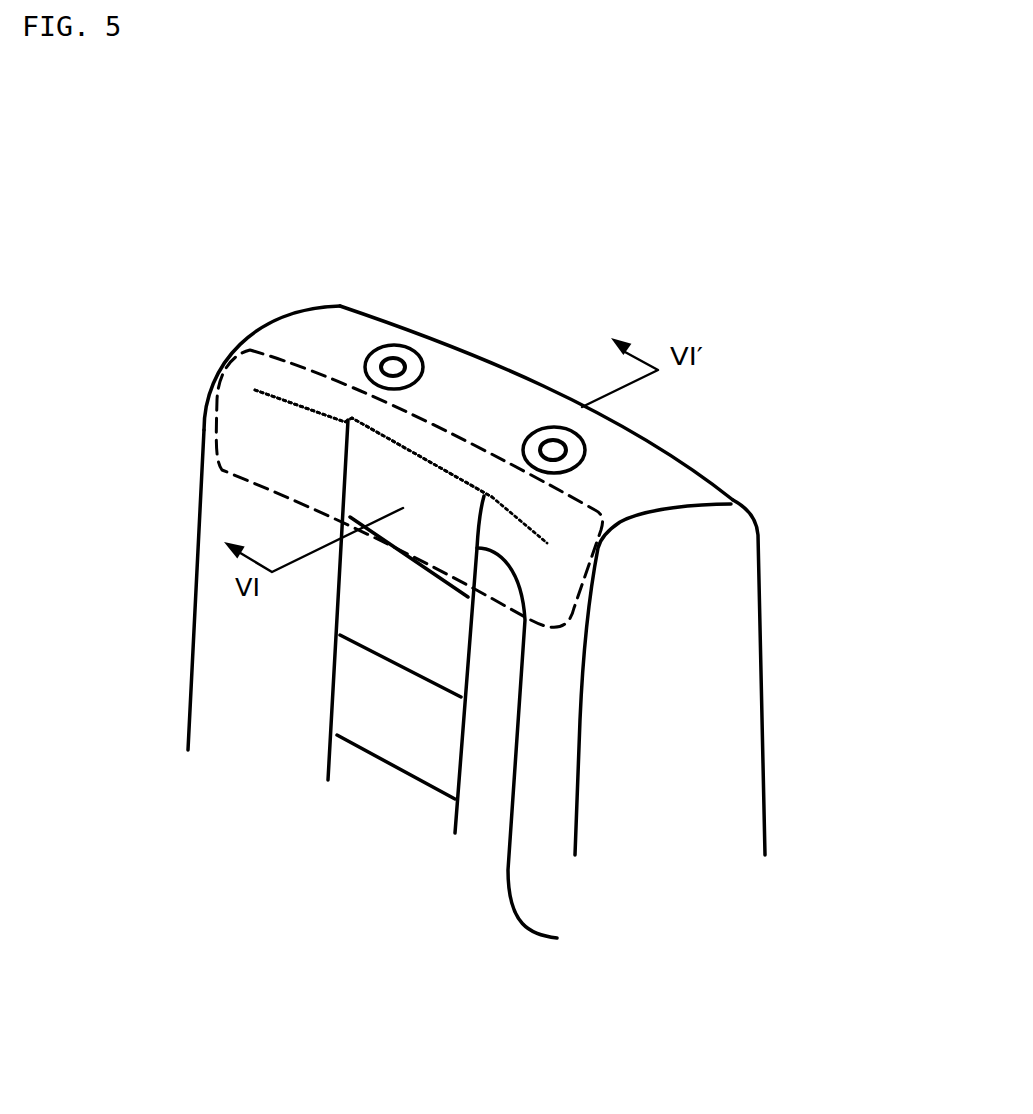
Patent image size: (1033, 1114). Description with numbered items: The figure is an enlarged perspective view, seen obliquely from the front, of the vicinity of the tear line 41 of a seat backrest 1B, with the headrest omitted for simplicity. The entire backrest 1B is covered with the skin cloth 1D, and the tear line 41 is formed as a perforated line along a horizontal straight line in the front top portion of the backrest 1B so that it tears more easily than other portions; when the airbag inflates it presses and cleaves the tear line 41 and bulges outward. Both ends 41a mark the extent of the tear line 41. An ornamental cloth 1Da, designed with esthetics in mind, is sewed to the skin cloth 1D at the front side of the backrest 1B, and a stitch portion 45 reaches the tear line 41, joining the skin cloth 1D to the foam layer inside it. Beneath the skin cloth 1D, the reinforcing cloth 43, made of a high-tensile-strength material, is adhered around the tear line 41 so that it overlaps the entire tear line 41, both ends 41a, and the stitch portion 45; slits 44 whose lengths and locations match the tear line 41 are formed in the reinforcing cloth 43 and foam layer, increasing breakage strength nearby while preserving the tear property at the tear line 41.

The tear line 41 is at (401, 379).
The slits 44 is at (312, 415).
The reinforcing cloth 43 is at (440, 430).
The ends of the tear line 41a is at (255, 390).
The stitch portion 45 is at (77, 522).
The backrest 1B is at (780, 628).
The skin cloth 1D is at (207, 695).
The ornamental cloth 1Da is at (395, 737).